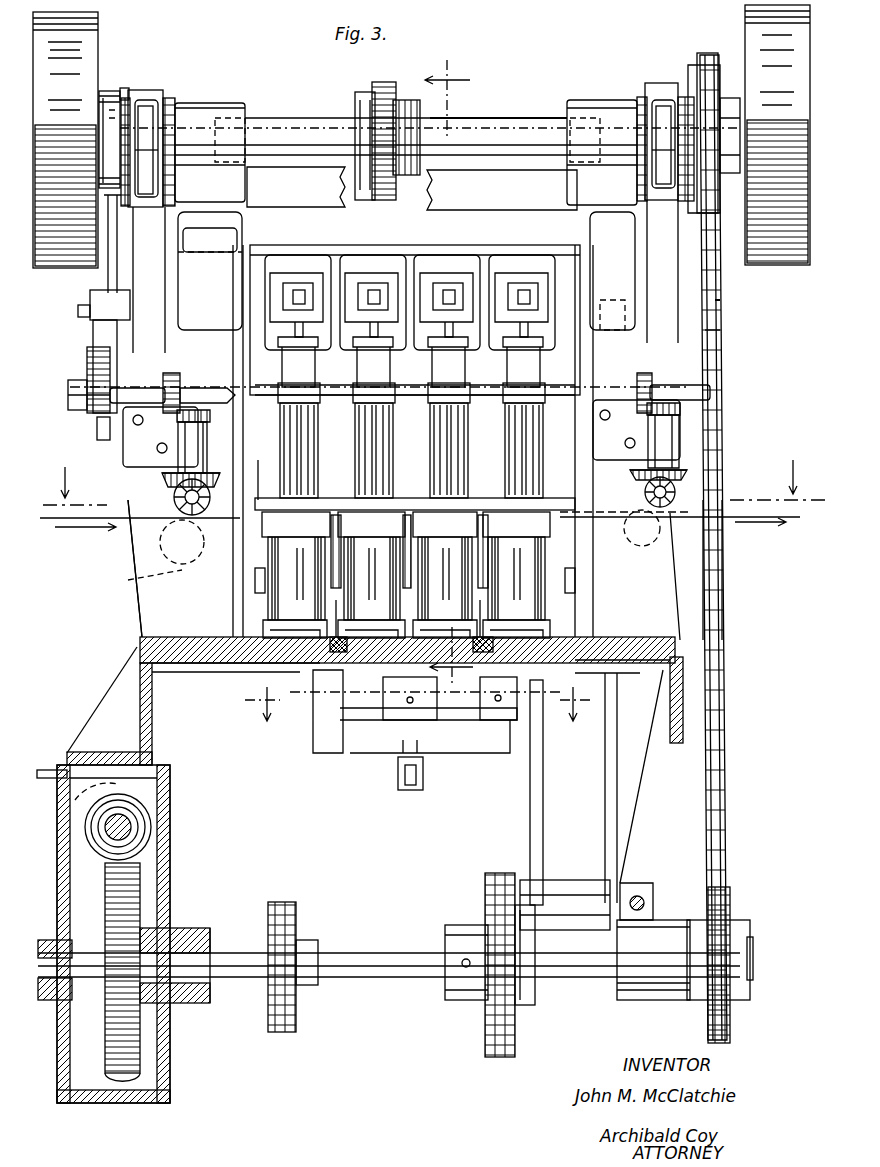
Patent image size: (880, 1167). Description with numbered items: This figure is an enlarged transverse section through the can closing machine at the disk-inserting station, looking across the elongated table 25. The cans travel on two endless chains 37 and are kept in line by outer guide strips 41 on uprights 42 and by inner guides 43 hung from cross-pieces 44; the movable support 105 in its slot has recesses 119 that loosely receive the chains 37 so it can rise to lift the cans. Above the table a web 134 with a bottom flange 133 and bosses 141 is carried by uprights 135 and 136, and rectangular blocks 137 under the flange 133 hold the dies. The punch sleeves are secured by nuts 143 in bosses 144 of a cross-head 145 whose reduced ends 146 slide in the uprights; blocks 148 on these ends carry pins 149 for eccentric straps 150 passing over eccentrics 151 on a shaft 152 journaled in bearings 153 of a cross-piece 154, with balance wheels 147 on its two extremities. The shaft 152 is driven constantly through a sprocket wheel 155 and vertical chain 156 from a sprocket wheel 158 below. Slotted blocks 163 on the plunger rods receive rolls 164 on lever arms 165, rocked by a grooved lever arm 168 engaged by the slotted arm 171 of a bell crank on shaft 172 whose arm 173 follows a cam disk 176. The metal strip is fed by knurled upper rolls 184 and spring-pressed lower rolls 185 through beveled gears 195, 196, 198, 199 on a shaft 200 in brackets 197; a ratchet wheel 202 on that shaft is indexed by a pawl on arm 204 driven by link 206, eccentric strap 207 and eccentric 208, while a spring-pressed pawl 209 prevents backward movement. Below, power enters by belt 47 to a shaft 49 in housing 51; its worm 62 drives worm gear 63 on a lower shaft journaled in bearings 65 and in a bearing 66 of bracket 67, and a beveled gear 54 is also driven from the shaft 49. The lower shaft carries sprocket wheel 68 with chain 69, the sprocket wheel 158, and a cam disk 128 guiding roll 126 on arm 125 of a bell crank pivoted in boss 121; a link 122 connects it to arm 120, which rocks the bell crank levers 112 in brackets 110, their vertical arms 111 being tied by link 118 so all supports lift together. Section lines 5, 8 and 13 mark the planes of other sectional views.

The balance wheel 147 is at (421, 136).
The eccentric 208 is at (126, 88).
The eccentric strap 207 is at (108, 95).
The eccentric strap 150 is at (146, 88).
The eccentric 151 is at (170, 100).
The bearing 153 is at (205, 108).
The shaft 172 is at (295, 118).
The shaft 152 is at (520, 108).
The bell crank arm 173 is at (360, 108).
The cam disk 176 is at (388, 88).
The lever arm 168 is at (392, 225).
The section line 8— 8 is at (449, 377).
The bell crank arm 171 is at (360, 182).
The cross-piece 154 is at (502, 190).
The reduced end of cross-head 146 is at (170, 278).
The link 206 is at (108, 270).
The pin 149 is at (90, 300).
The arm 204 is at (93, 340).
The block 148 is at (87, 367).
The ratchet wheel 202 is at (80, 395).
The boss of cross-head 144 is at (265, 385).
The beveled gear 199 is at (178, 375).
The shaft 200 is at (215, 405).
The beveled gear 198 is at (690, 405).
The bracket 197 is at (130, 440).
The spring-pressed pawl 209 is at (97, 428).
The upper roll 184 is at (160, 478).
The beveled gear 196 is at (175, 490).
The beveled gear 195 is at (180, 505).
The section line 5— 5 is at (432, 495).
The upright 135 is at (130, 568).
The lower roll 185 is at (138, 600).
The cross-piece 44 is at (259, 473).
The cross-head 145 is at (418, 258).
The roll 164 is at (296, 280).
The block 163 is at (300, 292).
The lever arm 165 is at (290, 290).
The nut 143 is at (290, 338).
The web 134 is at (392, 440).
The boss of web 141 is at (420, 430).
The flange 133 is at (405, 500).
The rectangular block 137 is at (369, 575).
The inner guide 43 is at (360, 557).
The upright 42 is at (255, 568).
The outer guide strip 41 is at (330, 580).
The recess 119 is at (330, 608).
The endless chain 37 is at (300, 663).
The movable support 105 is at (262, 672).
The table 25 is at (215, 663).
The belt 47 is at (45, 770).
The section line 13— 13 is at (423, 700).
The bracket 110 is at (318, 738).
The bell crank lever 112 is at (425, 705).
The arm 120 is at (505, 705).
The vertical arm 111 is at (410, 728).
The link 118 is at (410, 790).
The link 122 is at (543, 780).
The bracket 67 is at (640, 795).
The housing 51 is at (170, 885).
The shaft 49 is at (125, 828).
The worm 62 is at (145, 838).
The worm gear 63 is at (140, 1060).
The bearing 65 is at (195, 935).
The beveled gear 54 is at (400, 977).
The chain 69 is at (280, 902).
The sprocket wheel 68 is at (305, 940).
The cam disk 128 is at (500, 873).
The bell crank arm 125 is at (525, 965).
The roll 126 is at (518, 1000).
The boss 121 is at (565, 893).
The bearing 66 is at (653, 941).
The sprocket wheel 158 is at (733, 895).
The chain 156 is at (722, 660).
The upright 136 is at (722, 580).
The sprocket wheel 155 is at (715, 60).